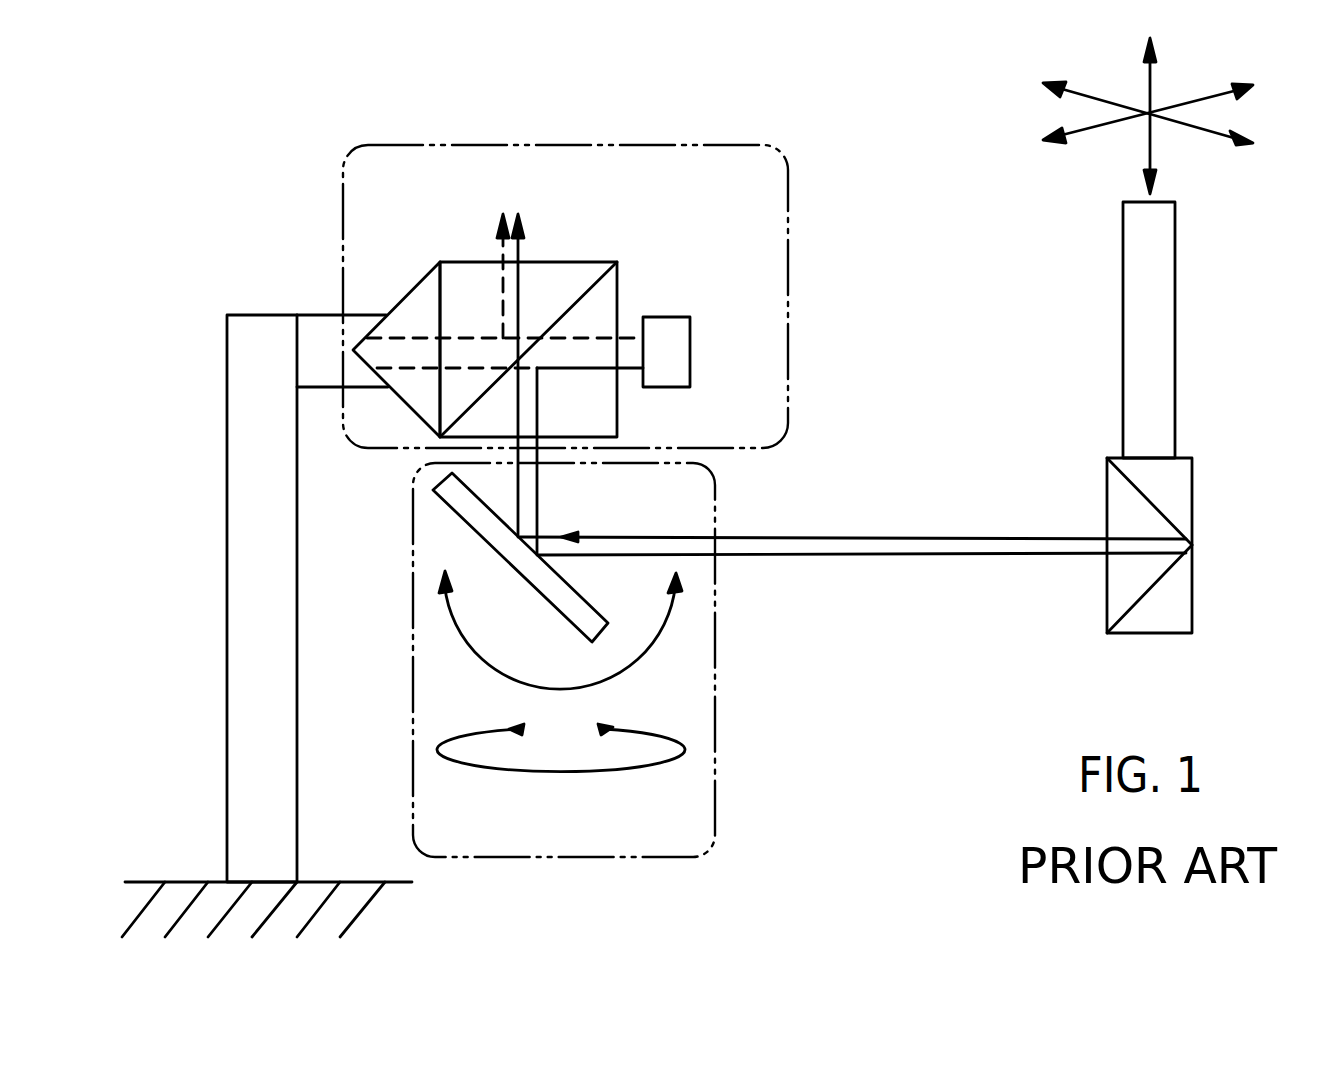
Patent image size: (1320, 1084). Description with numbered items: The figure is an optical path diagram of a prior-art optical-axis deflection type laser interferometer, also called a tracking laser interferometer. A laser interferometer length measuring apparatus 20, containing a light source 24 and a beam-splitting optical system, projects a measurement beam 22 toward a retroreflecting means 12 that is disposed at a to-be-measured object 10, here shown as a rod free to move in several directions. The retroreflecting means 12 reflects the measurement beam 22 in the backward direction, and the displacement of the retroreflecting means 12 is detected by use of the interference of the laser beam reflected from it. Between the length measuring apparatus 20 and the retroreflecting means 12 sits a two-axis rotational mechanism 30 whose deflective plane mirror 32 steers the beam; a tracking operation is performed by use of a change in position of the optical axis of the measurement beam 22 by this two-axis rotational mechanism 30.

The to-be-measured object 10 is at (1175, 345).
The retroreflecting means 12 is at (1103, 612).
The laser interferometer length measuring apparatus 20 is at (616, 145).
The measurement beam 22 is at (760, 558).
The light source 24 is at (678, 348).
The two-axis rotational mechanism 30 is at (576, 858).
The deflective plane mirror 32 is at (440, 493).